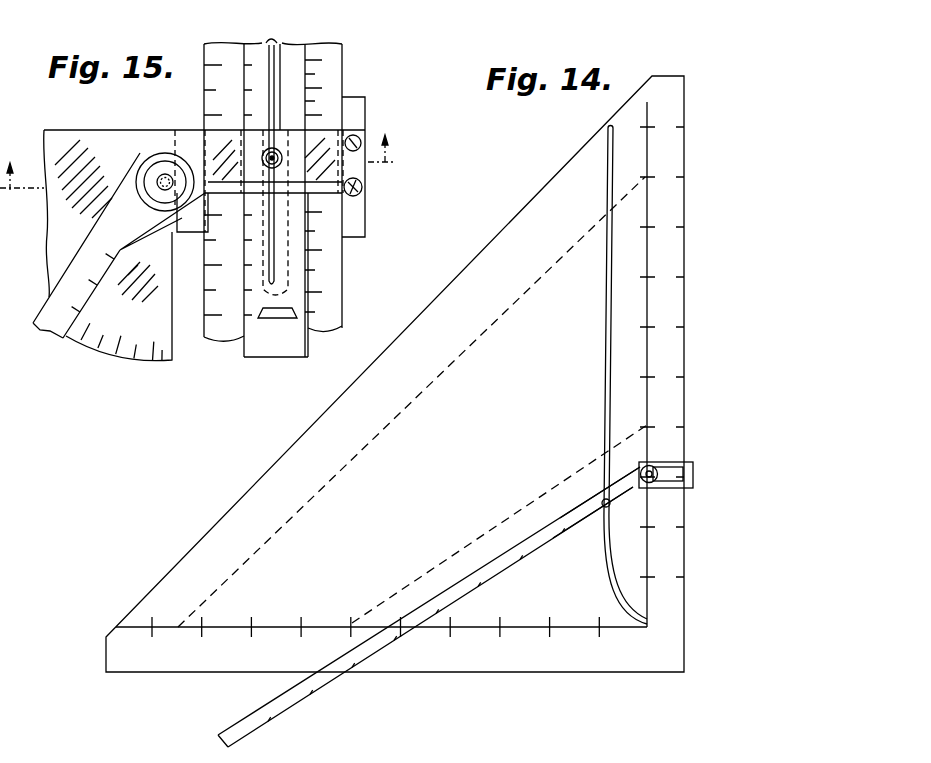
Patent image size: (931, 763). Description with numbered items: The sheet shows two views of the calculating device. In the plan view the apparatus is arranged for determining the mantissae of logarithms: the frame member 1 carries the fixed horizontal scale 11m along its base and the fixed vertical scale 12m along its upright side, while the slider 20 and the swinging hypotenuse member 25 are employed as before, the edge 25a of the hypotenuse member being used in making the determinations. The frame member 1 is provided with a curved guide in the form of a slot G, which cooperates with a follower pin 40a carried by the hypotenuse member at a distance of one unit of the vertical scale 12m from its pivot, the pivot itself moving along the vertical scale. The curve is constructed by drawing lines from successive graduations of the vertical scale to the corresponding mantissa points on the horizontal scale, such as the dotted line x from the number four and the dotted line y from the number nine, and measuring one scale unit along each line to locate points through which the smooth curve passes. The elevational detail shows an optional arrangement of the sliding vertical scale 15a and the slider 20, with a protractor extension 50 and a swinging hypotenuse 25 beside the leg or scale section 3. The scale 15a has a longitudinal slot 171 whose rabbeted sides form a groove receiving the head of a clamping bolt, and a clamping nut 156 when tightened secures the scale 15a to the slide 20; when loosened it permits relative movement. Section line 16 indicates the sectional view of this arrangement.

In FIG. 15, the inner triangular member 1 is at (137, 222).
In FIG. 14, the inner triangular member 1 is at (445, 297).
In FIG. 15, the leg portion 3 is at (343, 71).
In FIG. 15, the sliding scale 15a is at (258, 336).
In FIG. 15, the section line 16 is at (198, 176).
In FIG. 15, the slider 20 is at (183, 130).
In FIG. 14, the slider 20 is at (694, 476).
In FIG. 15, the swinging hypotenuse member 25 is at (48, 311).
In FIG. 14, the swinging hypotenuse member 25 is at (258, 718).
In FIG. 14, the edge of the hypotenuse member 25a is at (472, 588).
In FIG. 14, the follower pin 40a is at (606, 508).
In FIG. 15, the protractor extension 50 is at (120, 349).
In FIG. 15, the clamping nut 156 is at (267, 156).
In FIG. 15, the longitudinal slot 171 is at (279, 43).
In FIG. 14, the fixed horizontal scale 11m is at (525, 668).
In FIG. 14, the fixed vertical scale 12m is at (677, 297).
In FIG. 14, the curved guide slot G is at (605, 360).
In FIG. 14, the dotted line x is at (458, 556).
In FIG. 14, the dotted line y is at (342, 462).